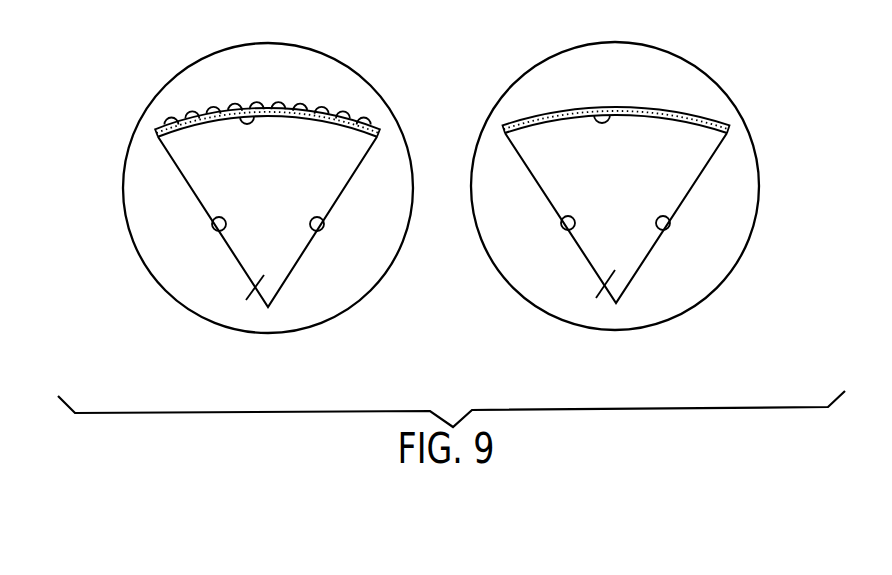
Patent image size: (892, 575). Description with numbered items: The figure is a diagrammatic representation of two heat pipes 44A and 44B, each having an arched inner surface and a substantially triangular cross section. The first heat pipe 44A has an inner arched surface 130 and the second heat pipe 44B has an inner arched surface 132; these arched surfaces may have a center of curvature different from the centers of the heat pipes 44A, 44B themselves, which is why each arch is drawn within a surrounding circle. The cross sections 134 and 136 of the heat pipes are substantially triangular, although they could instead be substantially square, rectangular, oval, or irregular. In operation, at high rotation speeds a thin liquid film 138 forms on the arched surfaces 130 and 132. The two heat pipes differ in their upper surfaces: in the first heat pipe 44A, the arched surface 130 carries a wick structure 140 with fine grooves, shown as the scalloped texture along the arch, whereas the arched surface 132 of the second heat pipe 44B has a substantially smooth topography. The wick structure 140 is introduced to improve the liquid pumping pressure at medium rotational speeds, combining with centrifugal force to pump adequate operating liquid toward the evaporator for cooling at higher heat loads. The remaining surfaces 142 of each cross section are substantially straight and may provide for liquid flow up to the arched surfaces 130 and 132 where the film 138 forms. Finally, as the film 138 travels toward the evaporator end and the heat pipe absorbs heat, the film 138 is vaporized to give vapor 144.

The first heat pipe 44A is at (127, 150).
The second heat pipe 44B is at (757, 143).
The inner arched surface 130 is at (231, 104).
The inner arched surface 132 is at (589, 108).
The cross section 134 is at (252, 200).
The cross section 136 is at (599, 198).
The thin liquid film 138 is at (345, 116).
The wick structure 140 is at (291, 110).
The straight surfaces 142 is at (220, 232).
The vapor 144 is at (246, 300).